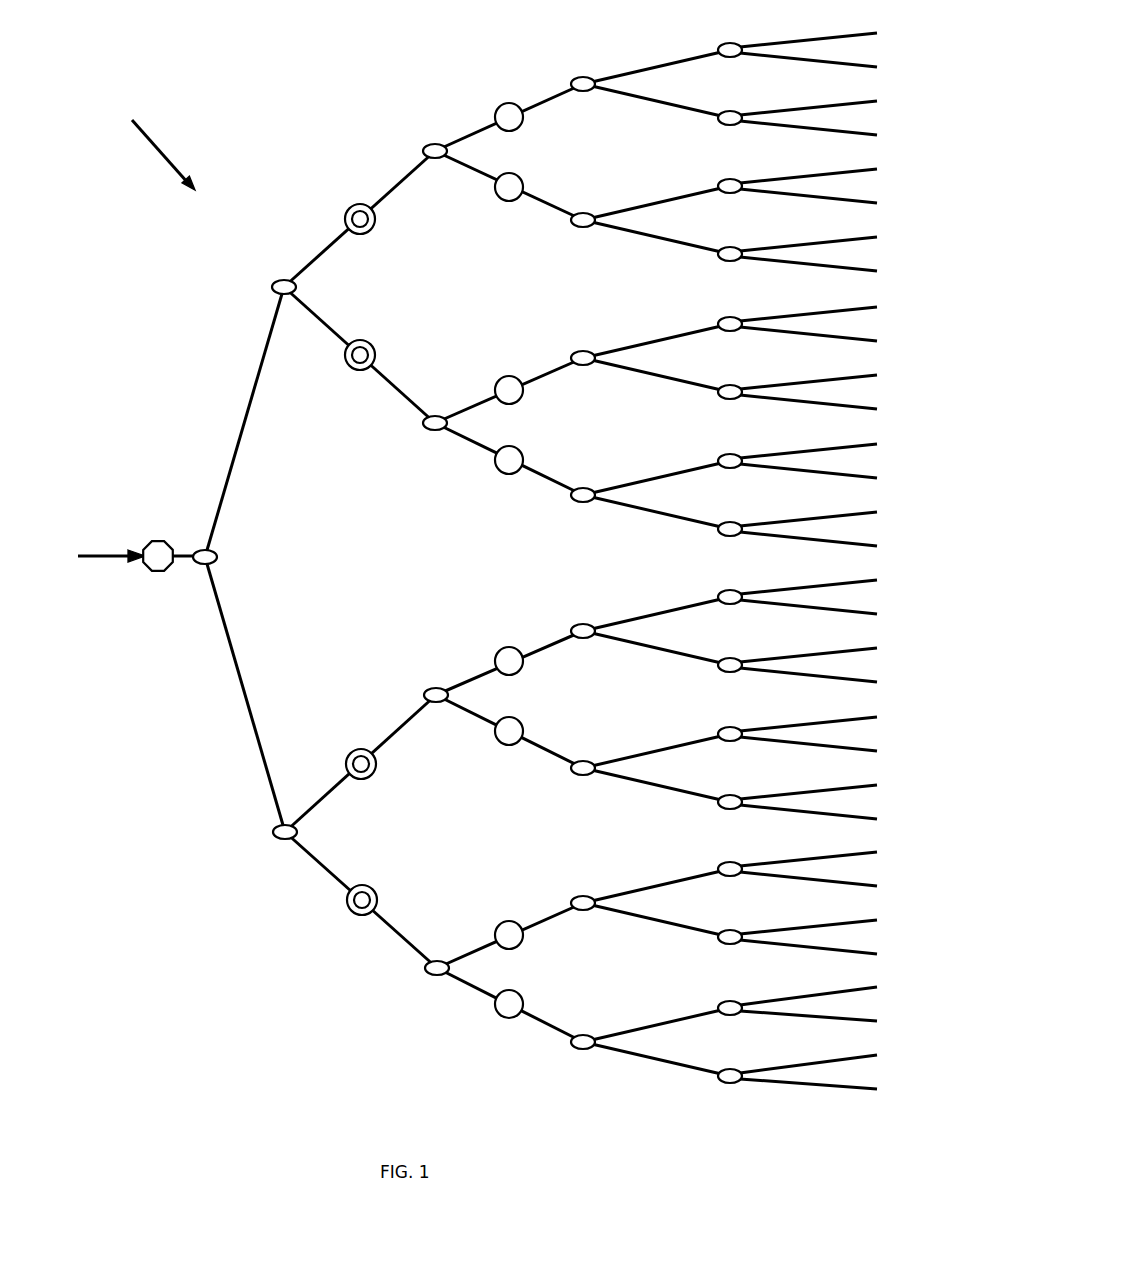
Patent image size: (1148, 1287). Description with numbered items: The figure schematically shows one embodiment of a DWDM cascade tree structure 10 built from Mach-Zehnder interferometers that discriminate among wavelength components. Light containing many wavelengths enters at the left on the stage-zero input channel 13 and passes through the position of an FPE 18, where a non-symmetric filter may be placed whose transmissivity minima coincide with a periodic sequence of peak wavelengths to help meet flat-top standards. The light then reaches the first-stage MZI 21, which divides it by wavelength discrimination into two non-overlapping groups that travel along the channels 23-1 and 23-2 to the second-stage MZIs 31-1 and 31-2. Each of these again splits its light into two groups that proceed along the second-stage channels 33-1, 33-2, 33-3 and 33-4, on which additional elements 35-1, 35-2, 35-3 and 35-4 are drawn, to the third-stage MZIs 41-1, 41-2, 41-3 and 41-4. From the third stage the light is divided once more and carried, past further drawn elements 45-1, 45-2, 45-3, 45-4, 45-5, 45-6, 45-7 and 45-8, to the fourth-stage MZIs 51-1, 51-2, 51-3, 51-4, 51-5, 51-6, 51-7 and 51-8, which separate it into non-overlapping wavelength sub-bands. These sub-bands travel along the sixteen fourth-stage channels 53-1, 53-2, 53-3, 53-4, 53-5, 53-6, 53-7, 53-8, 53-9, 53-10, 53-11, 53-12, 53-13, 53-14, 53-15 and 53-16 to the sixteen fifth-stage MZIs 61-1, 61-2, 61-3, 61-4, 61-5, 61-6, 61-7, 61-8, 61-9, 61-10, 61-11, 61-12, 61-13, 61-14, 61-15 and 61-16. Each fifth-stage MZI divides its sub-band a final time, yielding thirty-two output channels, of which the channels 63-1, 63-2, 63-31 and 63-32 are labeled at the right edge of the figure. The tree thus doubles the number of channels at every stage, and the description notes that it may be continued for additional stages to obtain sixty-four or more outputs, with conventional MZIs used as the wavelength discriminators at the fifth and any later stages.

The DWDM cascade tree structure 10 is at (151, 144).
The input channel 13 is at (107, 558).
The FPE 18 is at (158, 572).
The MZI 21 is at (220, 557).
The channel 23-1 is at (245, 690).
The channel 23-2 is at (243, 430).
The MZI 31-1 is at (288, 824).
The MZI 31-2 is at (283, 280).
The channel 33-1 is at (402, 938).
The channel 33-2 is at (402, 725).
The channel 33-3 is at (395, 390).
The channel 33-4 is at (400, 180).
The optical amplifier 35-1 is at (377, 898).
The optical amplifier 35-2 is at (375, 770).
The optical amplifier 35-3 is at (373, 352).
The optical amplifier 35-4 is at (378, 222).
The MZI 41-1 is at (437, 959).
The MZI 41-2 is at (436, 686).
The MZI 41-3 is at (435, 414).
The MZI 41-4 is at (435, 142).
The optical amplifier 45-1 is at (510, 1006).
The optical amplifier 45-2 is at (510, 933).
The optical amplifier 45-3 is at (510, 733).
The optical amplifier 45-4 is at (510, 659).
The optical amplifier 45-5 is at (510, 462).
The optical amplifier 45-6 is at (510, 388).
The optical amplifier 45-7 is at (510, 189).
The optical amplifier 45-8 is at (510, 115).
The MZI 51-1 is at (590, 1036).
The MZI 51-2 is at (590, 897).
The MZI 51-3 is at (590, 762).
The MZI 51-4 is at (590, 625).
The MZI 51-5 is at (590, 489).
The MZI 51-6 is at (590, 352).
The MZI 51-7 is at (590, 214).
The MZI 51-8 is at (590, 78).
The channel 53-1 is at (668, 1062).
The channel 53-2 is at (655, 1025).
The channel 53-3 is at (668, 923).
The channel 53-4 is at (655, 886).
The channel 53-5 is at (668, 788).
The channel 53-6 is at (655, 751).
The channel 53-7 is at (668, 651).
The channel 53-8 is at (655, 614).
The channel 53-9 is at (668, 515).
The channel 53-10 is at (655, 478).
The channel 53-11 is at (668, 378).
The channel 53-12 is at (655, 341).
The channel 53-13 is at (668, 240).
The channel 53-14 is at (655, 203).
The channel 53-15 is at (668, 104).
The channel 53-16 is at (655, 67).
The MZI 61-1 is at (740, 1073).
The MZI 61-2 is at (740, 1005).
The MZI 61-3 is at (738, 934).
The MZI 61-4 is at (738, 866).
The MZI 61-5 is at (738, 799).
The MZI 61-6 is at (738, 731).
The MZI 61-7 is at (738, 662).
The MZI 61-8 is at (738, 594).
The MZI 61-9 is at (738, 526).
The MZI 61-10 is at (738, 458).
The MZI 61-11 is at (738, 389).
The MZI 61-12 is at (738, 321).
The MZI 61-13 is at (738, 251).
The MZI 61-14 is at (738, 183).
The MZI 61-15 is at (738, 115).
The MZI 61-16 is at (738, 47).
The channel 63-1 is at (858, 1079).
The channel 63-2 is at (838, 1058).
The channel 63-31 is at (853, 62).
The channel 63-32 is at (853, 36).